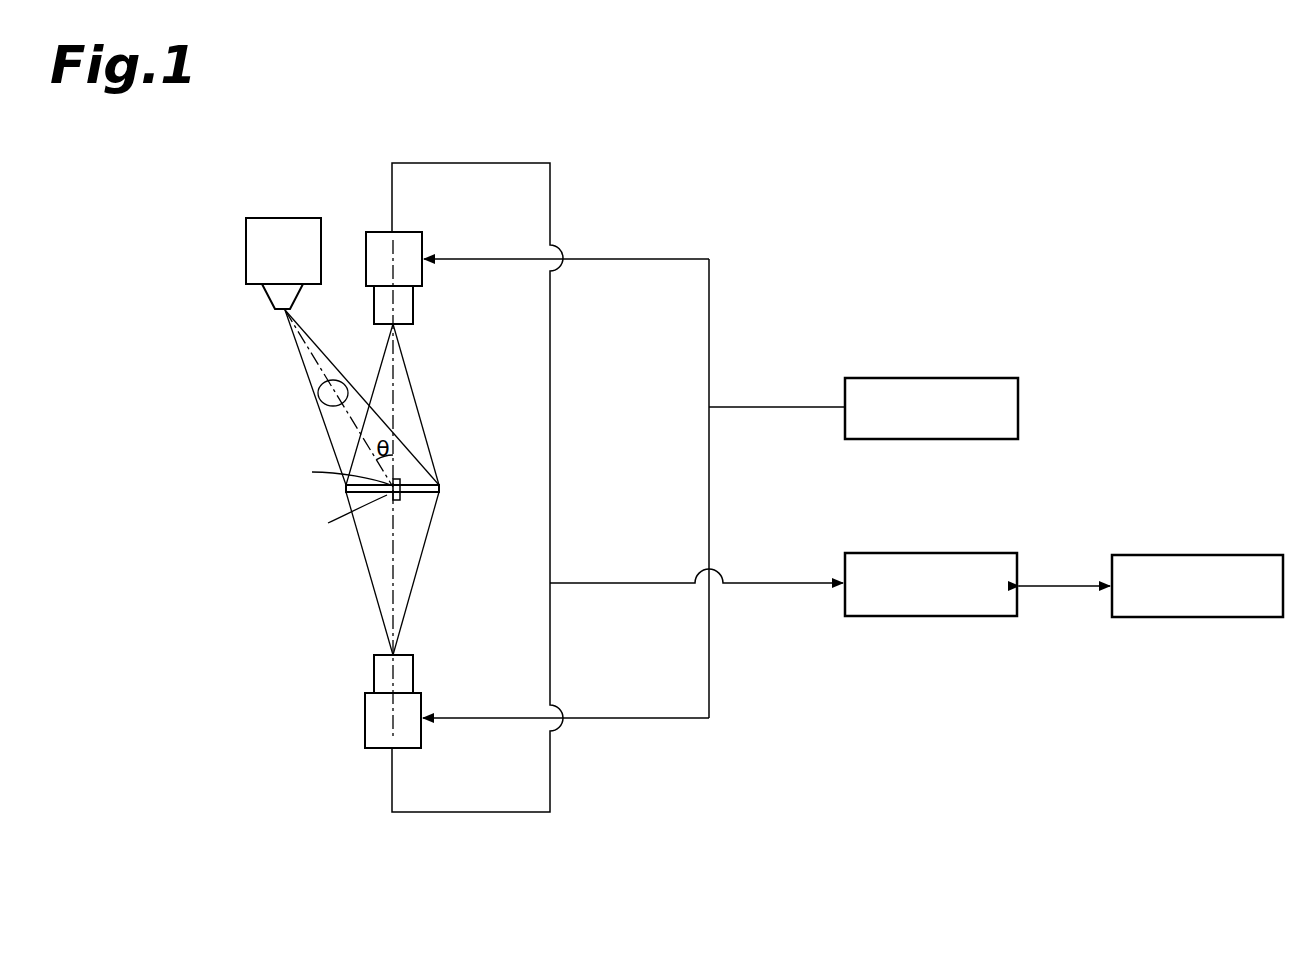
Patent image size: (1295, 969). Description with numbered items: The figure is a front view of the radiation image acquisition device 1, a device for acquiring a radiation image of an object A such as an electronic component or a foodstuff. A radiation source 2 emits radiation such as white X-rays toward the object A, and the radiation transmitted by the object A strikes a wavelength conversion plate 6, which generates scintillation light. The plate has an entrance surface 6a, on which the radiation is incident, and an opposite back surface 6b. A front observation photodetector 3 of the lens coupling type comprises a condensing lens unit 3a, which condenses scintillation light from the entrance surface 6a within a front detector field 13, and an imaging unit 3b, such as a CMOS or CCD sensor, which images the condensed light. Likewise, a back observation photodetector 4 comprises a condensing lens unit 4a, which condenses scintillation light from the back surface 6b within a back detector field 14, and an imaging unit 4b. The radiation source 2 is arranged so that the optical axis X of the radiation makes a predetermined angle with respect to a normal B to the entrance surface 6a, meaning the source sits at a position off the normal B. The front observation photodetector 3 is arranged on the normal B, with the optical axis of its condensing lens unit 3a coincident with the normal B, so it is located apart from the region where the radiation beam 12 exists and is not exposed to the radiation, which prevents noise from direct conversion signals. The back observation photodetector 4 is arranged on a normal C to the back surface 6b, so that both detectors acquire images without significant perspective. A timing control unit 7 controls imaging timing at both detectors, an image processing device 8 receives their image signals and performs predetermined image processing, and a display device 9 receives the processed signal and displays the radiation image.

The radiation image acquisition device 1 is at (912, 222).
The radiation source 2 is at (284, 218).
The front observation photodetector 3 is at (379, 229).
The condensing lens unit 3a is at (414, 304).
The imaging unit 3b is at (423, 246).
The back observation photodetector 4 is at (374, 753).
The condensing lens unit 4a is at (374, 673).
The imaging unit 4b is at (364, 715).
The wavelength conversion plate 6 is at (342, 487).
The entrance surface 6a is at (418, 484).
The back surface 6b is at (418, 494).
The timing control unit 7 is at (980, 378).
The image processing device 8 is at (995, 553).
The display device 9 is at (1225, 555).
The radiation beam 12 is at (340, 438).
The front detector field 13 is at (418, 440).
The back detector field 14 is at (405, 560).
The object A is at (332, 407).
The normal B is at (397, 406).
The normal C is at (392, 563).
The optical axis X is at (320, 378).